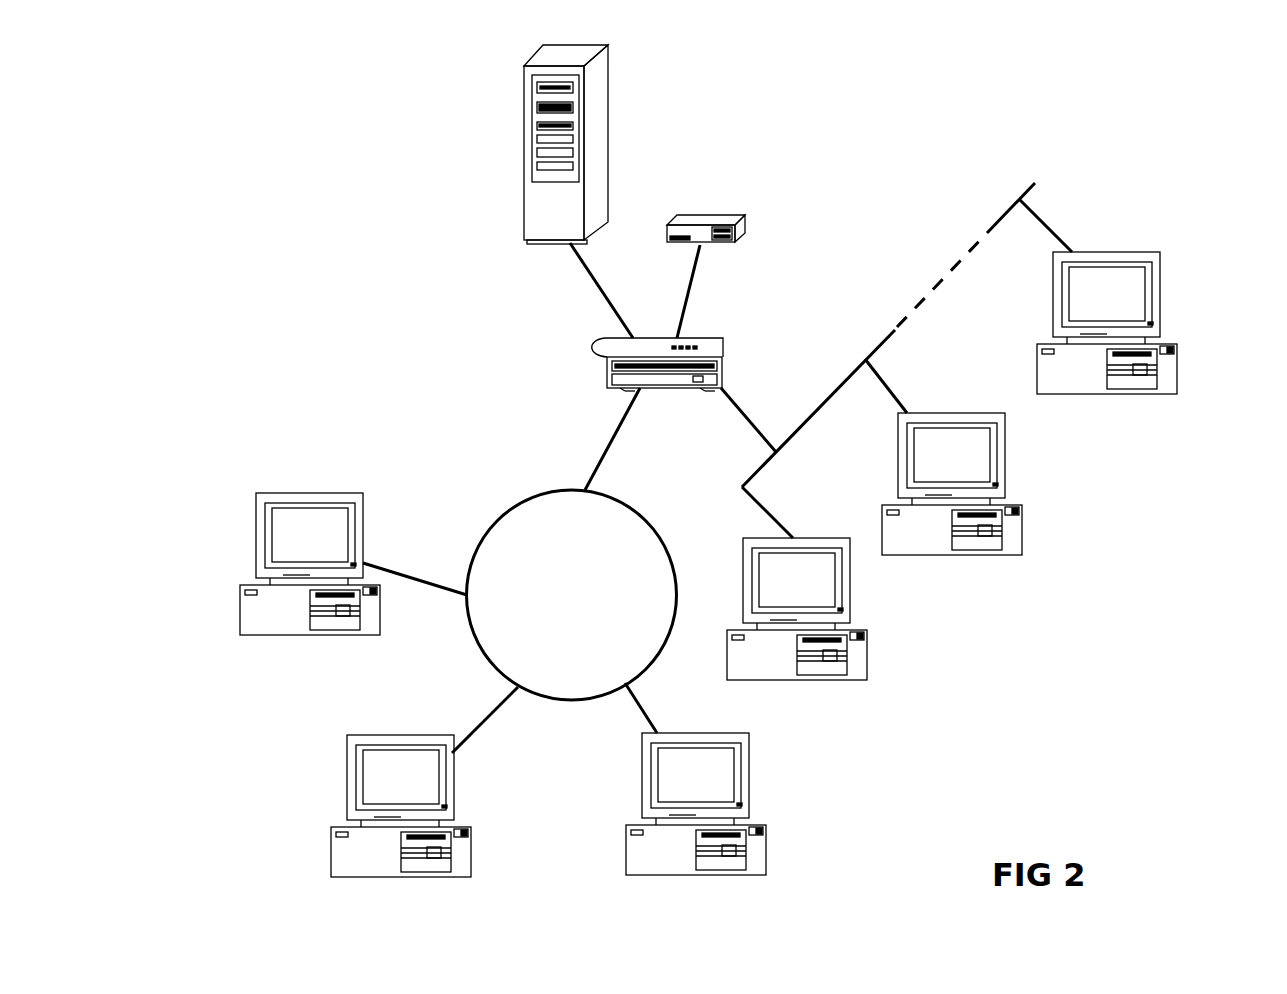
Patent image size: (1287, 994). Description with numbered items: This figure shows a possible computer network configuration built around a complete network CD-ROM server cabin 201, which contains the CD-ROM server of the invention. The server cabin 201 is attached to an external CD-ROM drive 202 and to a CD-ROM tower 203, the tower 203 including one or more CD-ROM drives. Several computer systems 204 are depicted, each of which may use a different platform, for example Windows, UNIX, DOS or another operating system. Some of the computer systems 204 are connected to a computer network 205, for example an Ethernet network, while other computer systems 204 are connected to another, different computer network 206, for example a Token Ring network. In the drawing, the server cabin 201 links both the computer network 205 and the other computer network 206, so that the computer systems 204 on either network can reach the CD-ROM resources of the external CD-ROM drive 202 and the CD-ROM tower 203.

The network CD-ROM server cabin 201 is at (590, 352).
The external CD-ROM drive 202 is at (712, 215).
The CD-ROM tower 203 is at (524, 148).
The computer systems 204 is at (765, 838).
The computer network 205 is at (880, 343).
The computer network 206 is at (480, 647).